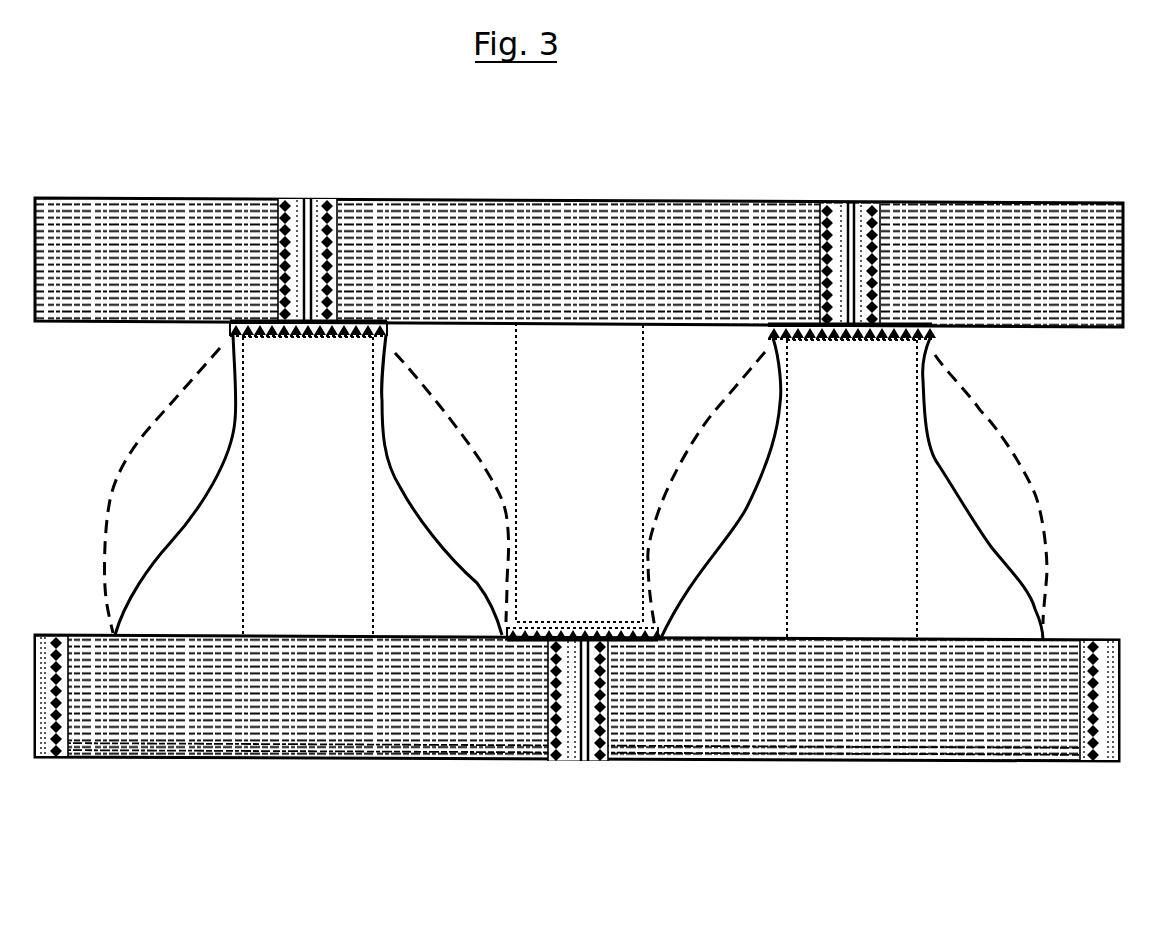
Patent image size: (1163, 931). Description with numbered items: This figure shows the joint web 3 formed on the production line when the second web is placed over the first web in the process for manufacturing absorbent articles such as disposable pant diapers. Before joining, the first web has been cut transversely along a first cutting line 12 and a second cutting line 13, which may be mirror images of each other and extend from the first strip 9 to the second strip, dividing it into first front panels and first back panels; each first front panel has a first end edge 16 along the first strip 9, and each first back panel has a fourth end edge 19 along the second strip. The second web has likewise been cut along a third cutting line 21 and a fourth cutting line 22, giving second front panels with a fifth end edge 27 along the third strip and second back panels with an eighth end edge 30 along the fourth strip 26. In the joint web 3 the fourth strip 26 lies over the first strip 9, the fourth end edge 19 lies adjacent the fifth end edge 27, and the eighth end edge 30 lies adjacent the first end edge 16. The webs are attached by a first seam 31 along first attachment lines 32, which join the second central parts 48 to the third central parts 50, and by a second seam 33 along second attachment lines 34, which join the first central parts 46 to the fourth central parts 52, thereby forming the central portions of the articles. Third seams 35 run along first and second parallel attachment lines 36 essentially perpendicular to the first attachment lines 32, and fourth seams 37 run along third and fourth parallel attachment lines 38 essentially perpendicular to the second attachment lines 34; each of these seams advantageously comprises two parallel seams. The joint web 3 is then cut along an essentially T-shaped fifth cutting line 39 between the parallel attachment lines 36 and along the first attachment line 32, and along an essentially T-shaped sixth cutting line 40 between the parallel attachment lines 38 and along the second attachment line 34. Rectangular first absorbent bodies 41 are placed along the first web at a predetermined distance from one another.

The joint web 3 is at (168, 825).
The first strip 9 is at (128, 732).
The first cutting line 12 is at (960, 387).
The second cutting line 13 is at (150, 427).
The first end edge 16 is at (637, 670).
The fourth end edge 19 is at (370, 320).
The third cutting line 21 is at (235, 420).
The fourth cutting line 22 is at (1007, 573).
The fourth strip 26 is at (190, 735).
The fifth end edge 27 is at (383, 320).
The eighth end edge 30 is at (640, 642).
The first seam 31 is at (360, 320).
The first attachment lines 32 is at (267, 320).
The second seam 33 is at (510, 627).
The second attachment lines 34 is at (638, 642).
The third seams 35 is at (277, 230).
The first and second parallel attachment lines 36 is at (281, 215).
The fourth seams 37 is at (558, 735).
The third and fourth parallel attachment lines 38 is at (555, 753).
The fifth cutting line 39 is at (308, 210).
The sixth cutting line 40 is at (573, 730).
The first absorbent bodies 41 is at (552, 432).
The first central part 46 is at (525, 587).
The second central part 48 is at (895, 300).
The third central part 50 is at (870, 387).
The fourth central part 52 is at (538, 597).